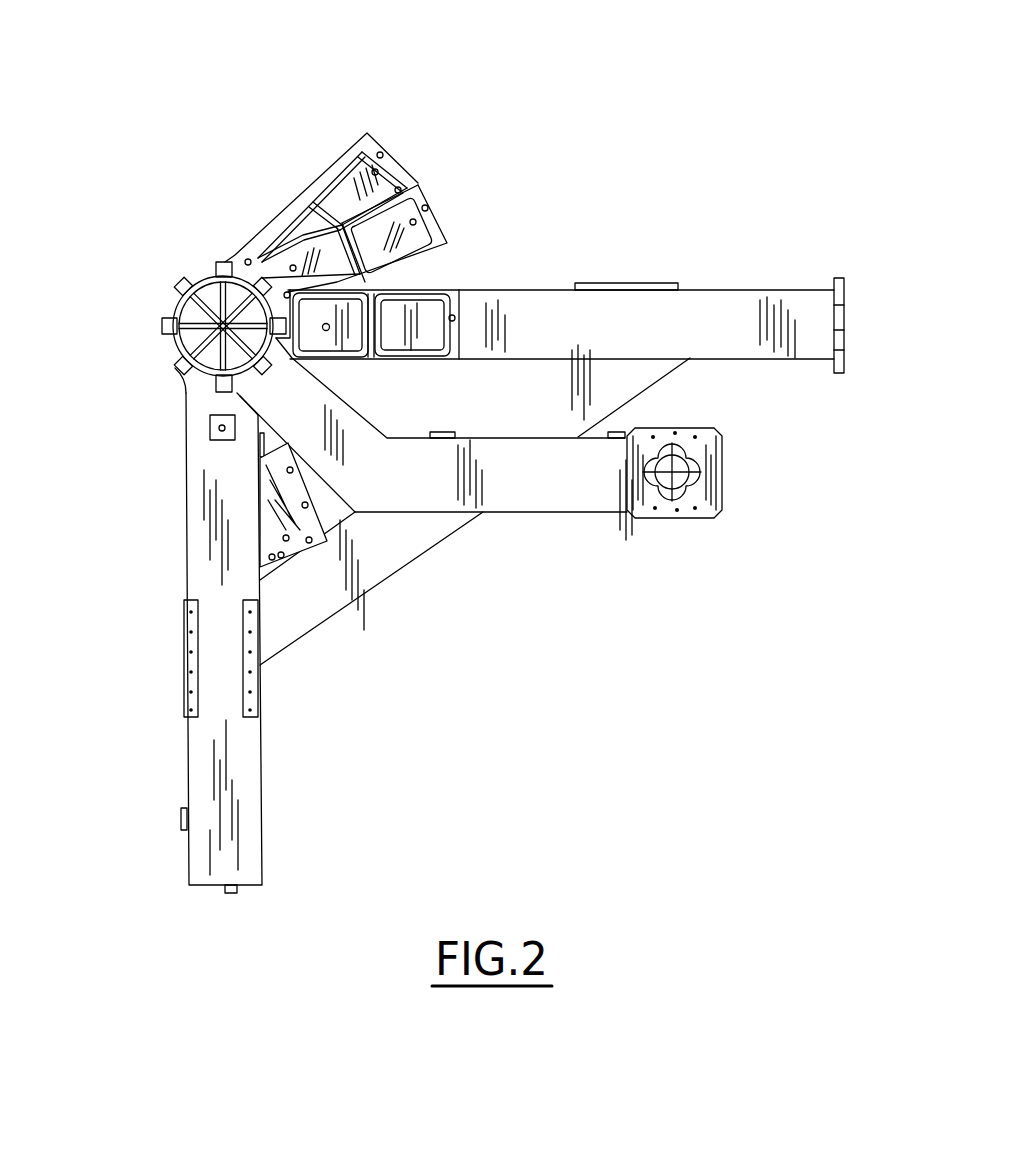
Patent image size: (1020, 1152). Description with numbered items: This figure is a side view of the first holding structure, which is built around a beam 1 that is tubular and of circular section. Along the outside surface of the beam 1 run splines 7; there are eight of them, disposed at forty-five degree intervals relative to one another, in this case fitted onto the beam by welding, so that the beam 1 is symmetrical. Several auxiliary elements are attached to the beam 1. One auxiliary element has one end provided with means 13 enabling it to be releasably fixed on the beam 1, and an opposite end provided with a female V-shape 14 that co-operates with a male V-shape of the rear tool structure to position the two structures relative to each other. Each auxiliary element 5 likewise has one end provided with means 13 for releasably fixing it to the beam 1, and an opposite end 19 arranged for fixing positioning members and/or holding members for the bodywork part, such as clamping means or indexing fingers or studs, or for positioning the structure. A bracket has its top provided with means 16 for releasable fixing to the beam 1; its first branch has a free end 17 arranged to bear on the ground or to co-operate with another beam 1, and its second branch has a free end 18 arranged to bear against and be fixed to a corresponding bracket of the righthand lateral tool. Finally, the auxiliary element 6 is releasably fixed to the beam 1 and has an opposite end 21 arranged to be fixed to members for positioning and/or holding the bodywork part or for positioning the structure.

The beam 1 is at (136, 312).
The auxiliary element 5 is at (323, 150).
The auxiliary element 6 is at (282, 525).
The splines 7 is at (224, 264).
The means for releasably fixing 13 is at (257, 256).
The female V-shape 14 is at (710, 498).
The means for releasably fixing 16 is at (190, 385).
The free end 17 is at (228, 858).
The free end 18 is at (845, 320).
The opposite end 19 is at (381, 143).
The opposite end 21 is at (297, 552).